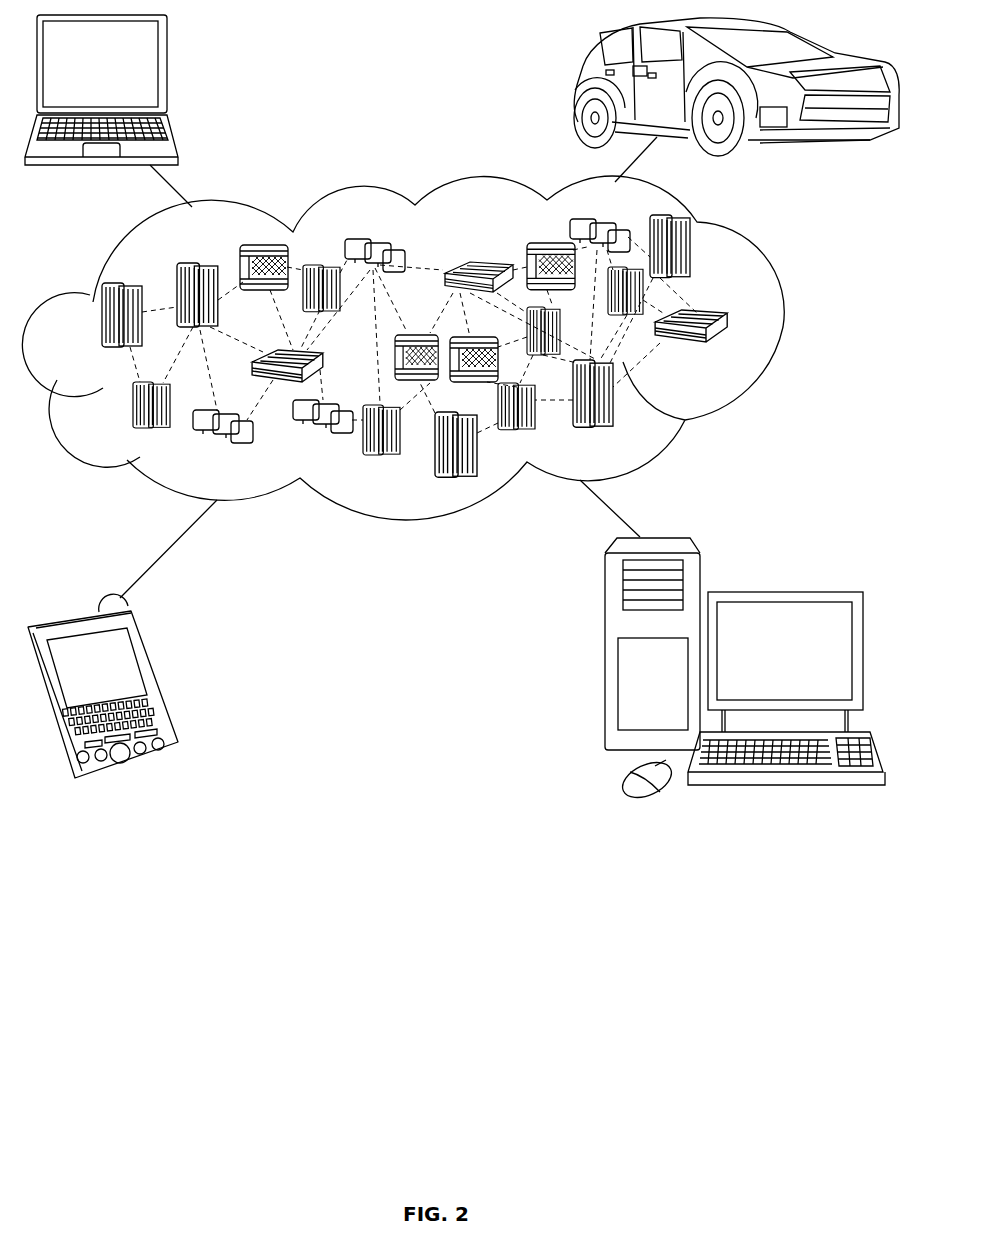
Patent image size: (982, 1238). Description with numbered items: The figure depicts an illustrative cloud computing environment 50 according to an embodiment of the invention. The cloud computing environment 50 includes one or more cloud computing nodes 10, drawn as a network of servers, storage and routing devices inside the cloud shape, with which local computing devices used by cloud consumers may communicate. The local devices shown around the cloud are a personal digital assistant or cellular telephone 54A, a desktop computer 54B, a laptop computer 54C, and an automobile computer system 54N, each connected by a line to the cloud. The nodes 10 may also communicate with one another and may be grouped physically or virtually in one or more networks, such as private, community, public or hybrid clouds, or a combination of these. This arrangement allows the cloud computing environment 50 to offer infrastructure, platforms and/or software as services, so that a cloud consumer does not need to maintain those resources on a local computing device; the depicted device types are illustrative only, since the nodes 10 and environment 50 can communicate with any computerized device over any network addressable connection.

The laptop computer 54C is at (167, 72).
The automobile computer system 54N is at (576, 86).
The personal digital assistant or cellular telephone 54A is at (157, 678).
The desktop computer 54B is at (782, 592).
The cloud computing environment 50 is at (781, 324).
The cloud computing node 10 is at (746, 357).